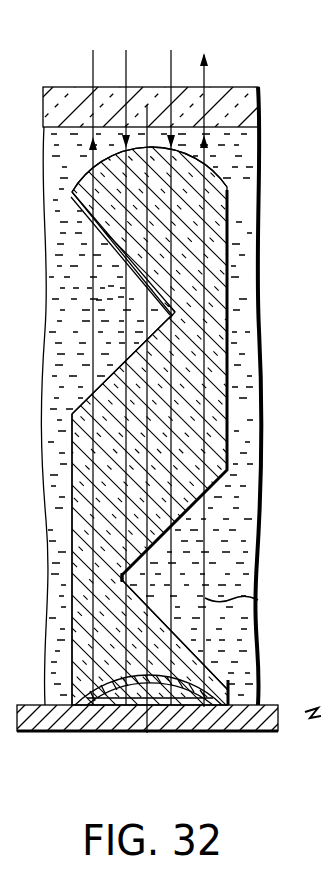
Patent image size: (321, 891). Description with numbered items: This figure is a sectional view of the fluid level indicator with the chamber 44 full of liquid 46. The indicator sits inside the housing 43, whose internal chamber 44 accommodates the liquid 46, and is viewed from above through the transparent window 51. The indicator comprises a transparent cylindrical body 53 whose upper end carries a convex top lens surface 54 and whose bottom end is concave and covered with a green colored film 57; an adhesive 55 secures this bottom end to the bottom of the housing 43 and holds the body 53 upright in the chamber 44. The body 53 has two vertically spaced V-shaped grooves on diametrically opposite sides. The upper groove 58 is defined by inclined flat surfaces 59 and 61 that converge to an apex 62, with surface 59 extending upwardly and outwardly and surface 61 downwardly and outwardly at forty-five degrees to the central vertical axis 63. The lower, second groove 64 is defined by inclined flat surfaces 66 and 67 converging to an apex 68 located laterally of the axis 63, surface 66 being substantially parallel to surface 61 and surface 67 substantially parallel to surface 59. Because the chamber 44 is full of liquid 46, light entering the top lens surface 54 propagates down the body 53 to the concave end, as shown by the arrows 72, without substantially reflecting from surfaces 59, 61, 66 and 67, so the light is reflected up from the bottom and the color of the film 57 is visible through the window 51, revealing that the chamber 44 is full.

The housing 43 is at (125, 730).
The internal chamber 44 is at (320, 682).
The liquid 46 is at (287, 396).
The transparent disk or window 51 is at (43, 107).
The cylindrical body 53 is at (85, 476).
The top lens surface 54 is at (217, 174).
The adhesive 55 is at (78, 702).
The colored film 57 is at (107, 702).
The V-shaped groove 58 is at (110, 292).
The inclined flat surface 59 is at (100, 228).
The inclined flat surface 61 is at (100, 382).
The apex 62 is at (175, 313).
The central vertical axis 63 is at (157, 650).
The second V-shaped groove 64 is at (260, 600).
The inclined flat surface 66 is at (225, 485).
The inclined flat surface 67 is at (207, 662).
The apex 68 is at (122, 574).
The arrows 72 is at (128, 72).